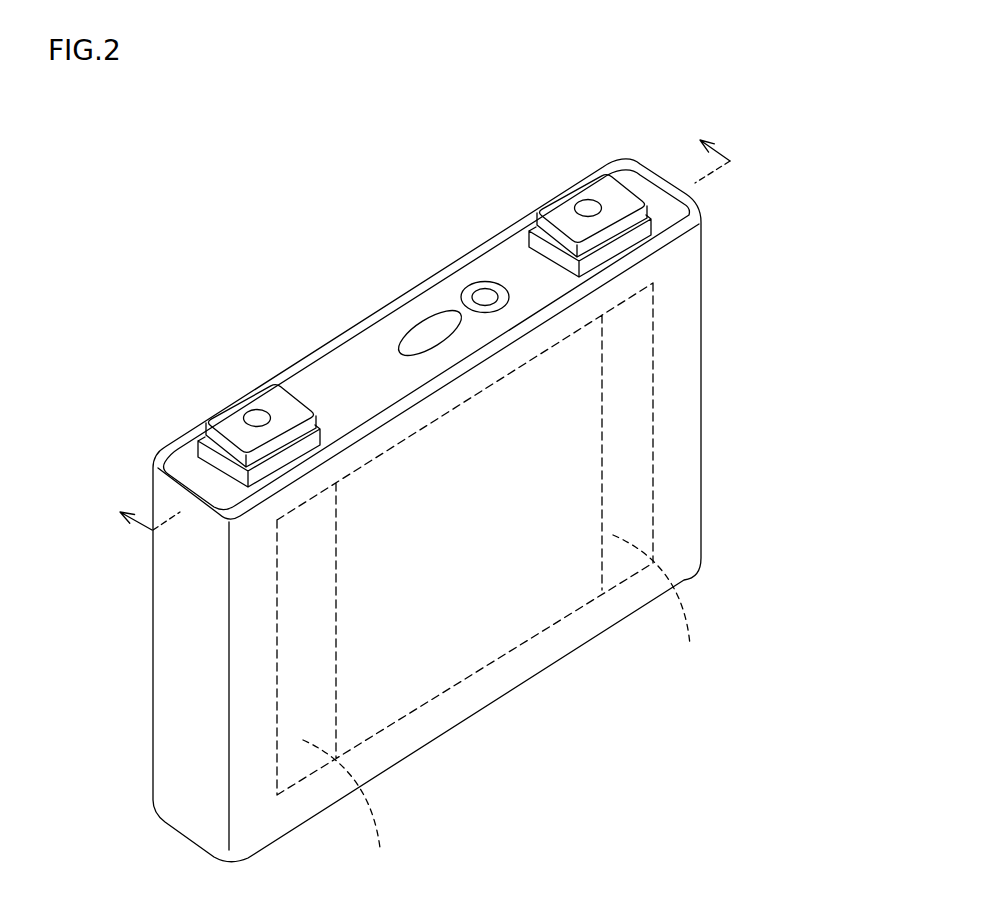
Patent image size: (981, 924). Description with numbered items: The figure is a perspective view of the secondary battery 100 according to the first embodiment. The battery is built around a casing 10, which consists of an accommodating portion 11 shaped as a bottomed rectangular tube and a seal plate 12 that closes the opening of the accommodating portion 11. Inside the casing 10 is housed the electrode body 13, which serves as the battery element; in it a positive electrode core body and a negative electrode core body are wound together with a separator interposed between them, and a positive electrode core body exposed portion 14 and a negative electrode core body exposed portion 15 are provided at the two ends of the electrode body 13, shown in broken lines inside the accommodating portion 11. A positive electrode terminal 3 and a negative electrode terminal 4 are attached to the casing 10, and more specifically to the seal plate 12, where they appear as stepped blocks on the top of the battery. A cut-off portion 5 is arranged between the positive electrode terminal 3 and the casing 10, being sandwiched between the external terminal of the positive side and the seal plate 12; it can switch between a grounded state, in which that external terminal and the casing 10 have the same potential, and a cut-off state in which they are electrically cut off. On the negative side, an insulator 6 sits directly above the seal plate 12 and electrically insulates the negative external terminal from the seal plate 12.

The secondary battery 100 is at (618, 98).
The casing 10 is at (753, 180).
The accommodating portion 11 is at (682, 318).
The seal plate 12 is at (678, 210).
The positive electrode terminal 3 is at (205, 372).
The negative electrode terminal 4 is at (544, 160).
The cut-off portion 5 is at (198, 437).
The insulator 6 is at (529, 229).
The electrode body 13 is at (487, 632).
The positive electrode core body exposed portion 14 is at (350, 809).
The negative electrode core body exposed portion 15 is at (660, 608).